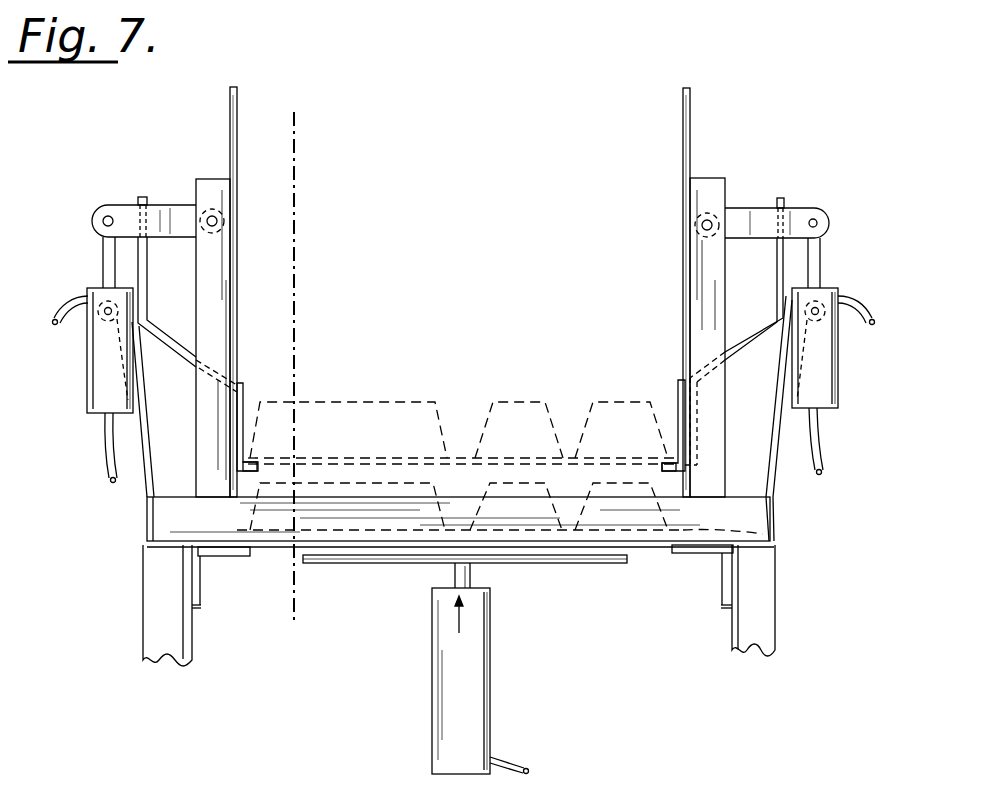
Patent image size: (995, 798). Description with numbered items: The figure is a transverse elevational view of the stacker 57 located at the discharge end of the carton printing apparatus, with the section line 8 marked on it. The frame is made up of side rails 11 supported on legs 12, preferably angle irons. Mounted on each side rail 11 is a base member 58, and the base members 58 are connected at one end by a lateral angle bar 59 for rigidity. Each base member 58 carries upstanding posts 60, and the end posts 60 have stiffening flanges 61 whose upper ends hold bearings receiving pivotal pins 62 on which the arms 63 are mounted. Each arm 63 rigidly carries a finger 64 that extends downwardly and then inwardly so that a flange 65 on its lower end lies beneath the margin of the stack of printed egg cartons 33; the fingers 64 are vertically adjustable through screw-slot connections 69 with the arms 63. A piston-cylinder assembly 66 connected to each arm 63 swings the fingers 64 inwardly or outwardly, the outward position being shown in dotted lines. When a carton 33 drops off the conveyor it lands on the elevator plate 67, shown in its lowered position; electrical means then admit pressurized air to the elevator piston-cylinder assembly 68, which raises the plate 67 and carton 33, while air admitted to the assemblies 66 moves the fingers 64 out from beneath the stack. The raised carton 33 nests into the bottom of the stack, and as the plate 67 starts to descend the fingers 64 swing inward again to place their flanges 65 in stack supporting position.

The section line 8- 8 is at (316, 112).
The side rail 11 is at (201, 590).
The leg 12 is at (152, 638).
The egg carton 33 is at (441, 400).
The stacker 57 is at (714, 138).
The base member 58 is at (768, 528).
The lateral angle bar 59 is at (165, 522).
The upstanding post 60 is at (238, 142).
The stiffening flange 61 is at (217, 313).
The pivotal pin 62 is at (210, 218).
The arm 63 is at (158, 210).
The finger 64 is at (166, 340).
The flange 65 is at (258, 462).
The piston-cylinder assembly 66 is at (103, 382).
The elevator plate 67 is at (377, 564).
The elevator piston-cylinder assembly 68 is at (444, 686).
The screw-slot connection 69 is at (376, 790).